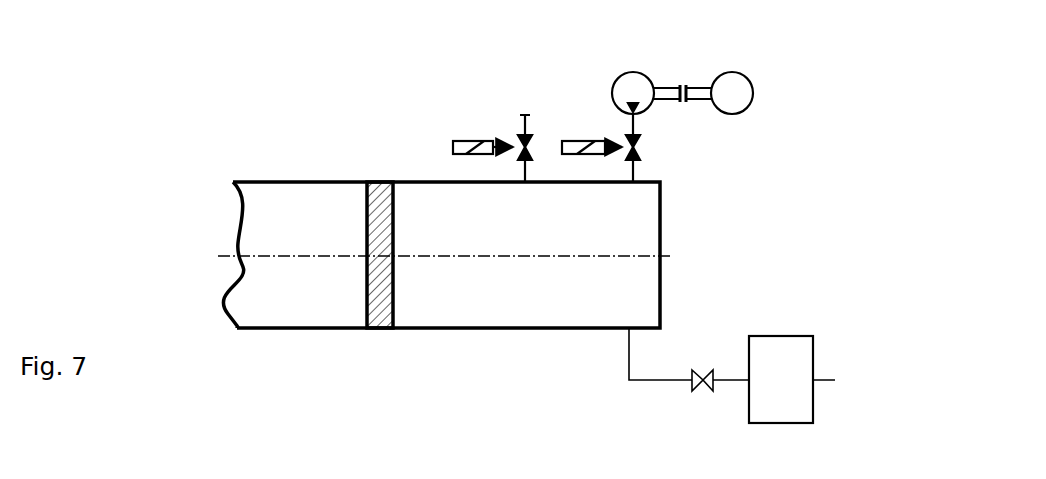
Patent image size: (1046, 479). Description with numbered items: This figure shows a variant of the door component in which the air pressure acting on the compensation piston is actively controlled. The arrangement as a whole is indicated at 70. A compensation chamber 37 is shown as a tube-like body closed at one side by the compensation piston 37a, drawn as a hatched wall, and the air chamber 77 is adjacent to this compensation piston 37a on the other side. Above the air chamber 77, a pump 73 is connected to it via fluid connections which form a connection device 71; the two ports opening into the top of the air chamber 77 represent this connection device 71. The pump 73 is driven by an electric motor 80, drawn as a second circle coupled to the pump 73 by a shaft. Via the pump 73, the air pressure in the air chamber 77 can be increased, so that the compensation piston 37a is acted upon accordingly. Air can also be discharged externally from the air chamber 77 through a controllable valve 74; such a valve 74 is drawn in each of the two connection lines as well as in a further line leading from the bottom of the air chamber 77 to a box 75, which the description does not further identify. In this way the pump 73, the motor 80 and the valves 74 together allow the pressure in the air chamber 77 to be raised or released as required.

The cleaning system 70 is at (842, 71).
The compensation chamber 37 is at (298, 188).
The compensation piston 37a is at (382, 188).
The connection device 71 is at (632, 175).
The controllable valve 74 is at (498, 133).
The pump 73 is at (624, 82).
The electric motor 80 is at (733, 91).
The air chamber 77 is at (512, 295).
The collection tank 75 is at (782, 412).